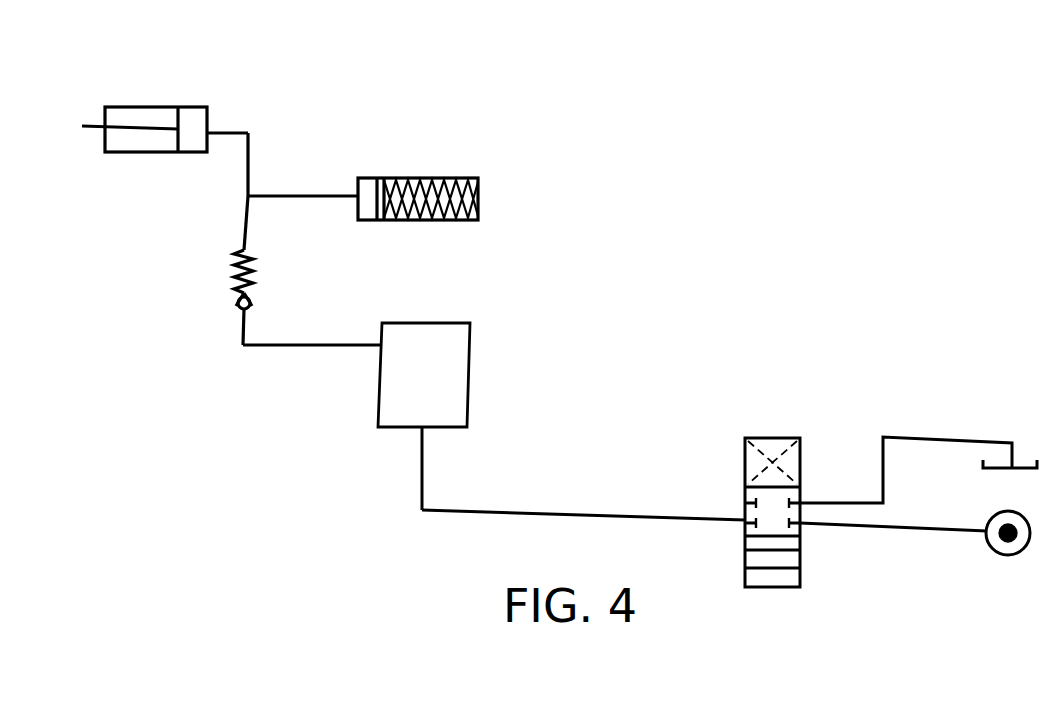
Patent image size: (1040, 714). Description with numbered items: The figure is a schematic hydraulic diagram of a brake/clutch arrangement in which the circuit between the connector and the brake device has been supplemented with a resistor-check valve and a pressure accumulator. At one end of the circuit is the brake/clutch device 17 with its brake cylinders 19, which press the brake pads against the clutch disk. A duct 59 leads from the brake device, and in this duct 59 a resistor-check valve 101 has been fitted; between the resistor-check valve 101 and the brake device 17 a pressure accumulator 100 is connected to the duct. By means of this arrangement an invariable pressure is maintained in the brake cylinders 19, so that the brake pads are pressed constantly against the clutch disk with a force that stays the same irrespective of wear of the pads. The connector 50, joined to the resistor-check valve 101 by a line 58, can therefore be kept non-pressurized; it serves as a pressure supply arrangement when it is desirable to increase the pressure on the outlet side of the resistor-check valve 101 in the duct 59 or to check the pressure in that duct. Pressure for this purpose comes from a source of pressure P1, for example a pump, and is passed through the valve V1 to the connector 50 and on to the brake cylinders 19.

The brake/clutch device 17 is at (133, 98).
The brake cylinders 19 is at (182, 108).
The duct 59 is at (250, 166).
The pressure accumulator 100 is at (392, 177).
The resistor-check valve 101 is at (253, 280).
The connector 50 is at (430, 322).
The hydraulic line 58 is at (293, 353).
The valve V1 is at (776, 412).
The source of pressure P1 is at (990, 555).